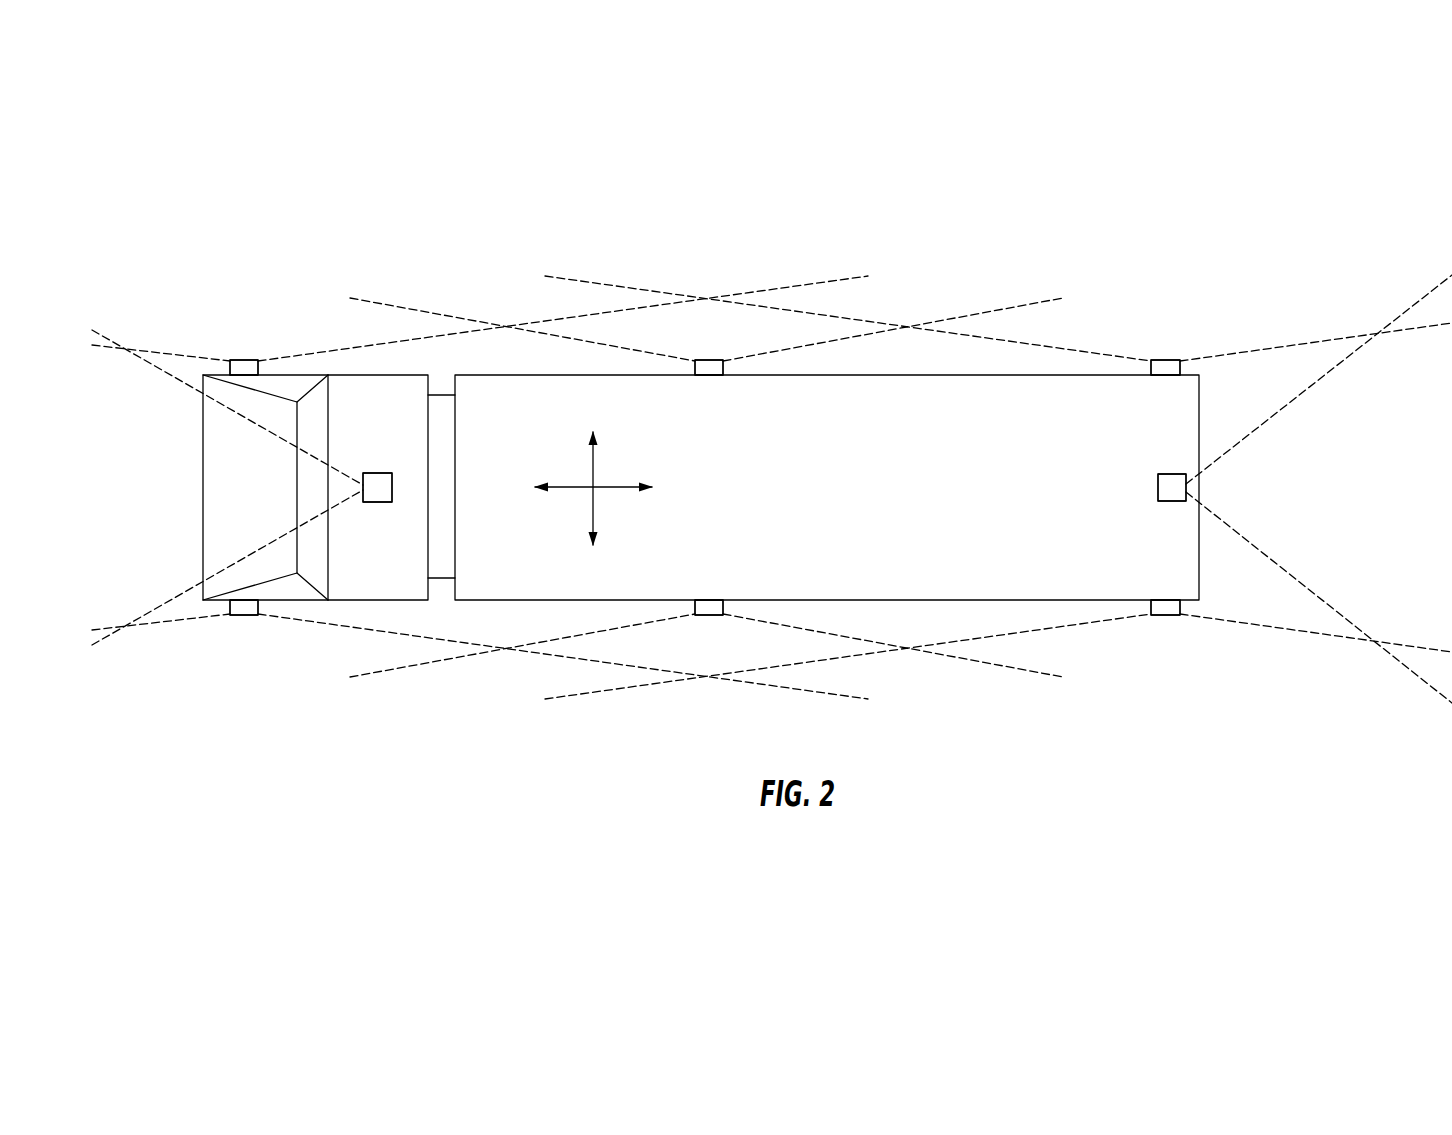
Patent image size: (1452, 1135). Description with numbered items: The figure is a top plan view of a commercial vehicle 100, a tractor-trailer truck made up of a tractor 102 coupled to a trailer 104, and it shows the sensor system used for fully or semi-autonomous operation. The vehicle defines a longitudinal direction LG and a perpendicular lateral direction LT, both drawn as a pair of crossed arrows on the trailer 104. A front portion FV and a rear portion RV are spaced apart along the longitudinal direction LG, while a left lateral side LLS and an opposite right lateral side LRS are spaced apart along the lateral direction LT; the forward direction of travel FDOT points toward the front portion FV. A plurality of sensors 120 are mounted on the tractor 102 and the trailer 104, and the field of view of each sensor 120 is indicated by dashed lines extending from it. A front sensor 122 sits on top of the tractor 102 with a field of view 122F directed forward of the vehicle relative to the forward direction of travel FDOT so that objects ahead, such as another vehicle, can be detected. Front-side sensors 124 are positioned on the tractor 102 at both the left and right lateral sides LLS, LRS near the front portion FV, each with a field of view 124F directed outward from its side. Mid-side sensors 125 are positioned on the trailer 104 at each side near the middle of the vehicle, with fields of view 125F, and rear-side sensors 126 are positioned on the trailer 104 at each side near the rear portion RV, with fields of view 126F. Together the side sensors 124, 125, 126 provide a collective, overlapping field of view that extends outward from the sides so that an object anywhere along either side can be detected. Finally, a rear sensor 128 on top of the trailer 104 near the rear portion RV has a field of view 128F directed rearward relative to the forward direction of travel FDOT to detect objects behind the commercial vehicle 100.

The commercial vehicle 100 is at (228, 258).
The tractor 102 is at (222, 462).
The trailer 104 is at (920, 402).
The sensors 120 is at (230, 367).
The front sensor 122 is at (377, 486).
The field of view of front sensor 122F is at (170, 378).
The front-side sensors 124 is at (243, 365).
The field of view of front-side sensor 124F is at (325, 343).
The mid-side sensors 125 is at (710, 365).
The field of view of mid-side sensor 125F is at (977, 312).
The rear-side sensors 126 is at (1165, 367).
The field of view of rear-side sensor 126F is at (1110, 353).
The rear sensor 128 is at (1173, 493).
The field of view of rear sensor 128F is at (1323, 378).
The front portion FV is at (183, 488).
The rear portion RV is at (1215, 488).
The forward direction of travel FDOT is at (178, 562).
The lateral direction LT is at (592, 470).
The longitudinal direction LG is at (613, 490).
The right lateral side LRS is at (697, 252).
The left lateral side LLS is at (677, 710).